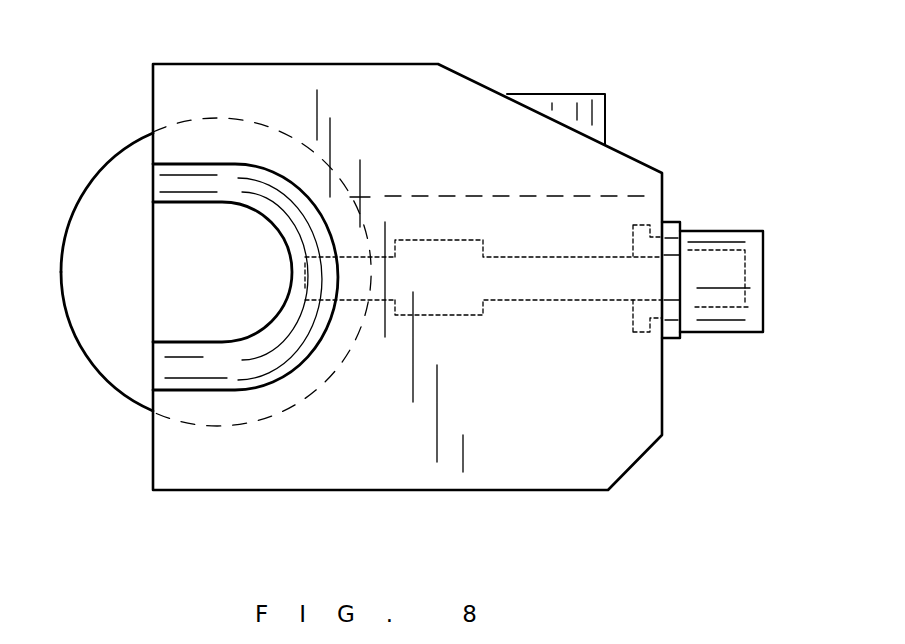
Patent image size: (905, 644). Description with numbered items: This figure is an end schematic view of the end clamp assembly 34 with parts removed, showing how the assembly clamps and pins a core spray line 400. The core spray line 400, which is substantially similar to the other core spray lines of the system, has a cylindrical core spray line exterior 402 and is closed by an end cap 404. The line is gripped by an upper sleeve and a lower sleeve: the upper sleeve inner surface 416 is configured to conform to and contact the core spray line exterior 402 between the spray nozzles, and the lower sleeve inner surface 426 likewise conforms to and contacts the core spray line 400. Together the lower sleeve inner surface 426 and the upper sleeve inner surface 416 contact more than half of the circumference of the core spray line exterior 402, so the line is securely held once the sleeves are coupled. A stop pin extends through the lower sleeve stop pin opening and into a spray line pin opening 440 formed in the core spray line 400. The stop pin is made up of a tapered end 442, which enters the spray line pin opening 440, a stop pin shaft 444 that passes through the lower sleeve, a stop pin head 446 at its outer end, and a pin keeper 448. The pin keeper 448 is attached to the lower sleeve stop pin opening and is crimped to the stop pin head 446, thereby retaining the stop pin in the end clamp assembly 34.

The end clamp assembly 34 is at (648, 110).
The core spray line 400 is at (137, 138).
The cylindrical core spray line exterior 402 is at (78, 203).
The end cap 404 is at (185, 270).
The upper sleeve inner surface 416 is at (266, 130).
The lower sleeve inner surface 426 is at (320, 375).
The spray line pin opening 440 is at (372, 256).
The tapered end 442 is at (317, 293).
The stop pin shaft 444 is at (551, 285).
The stop pin head 446 is at (718, 279).
The pin keeper 448 is at (718, 237).